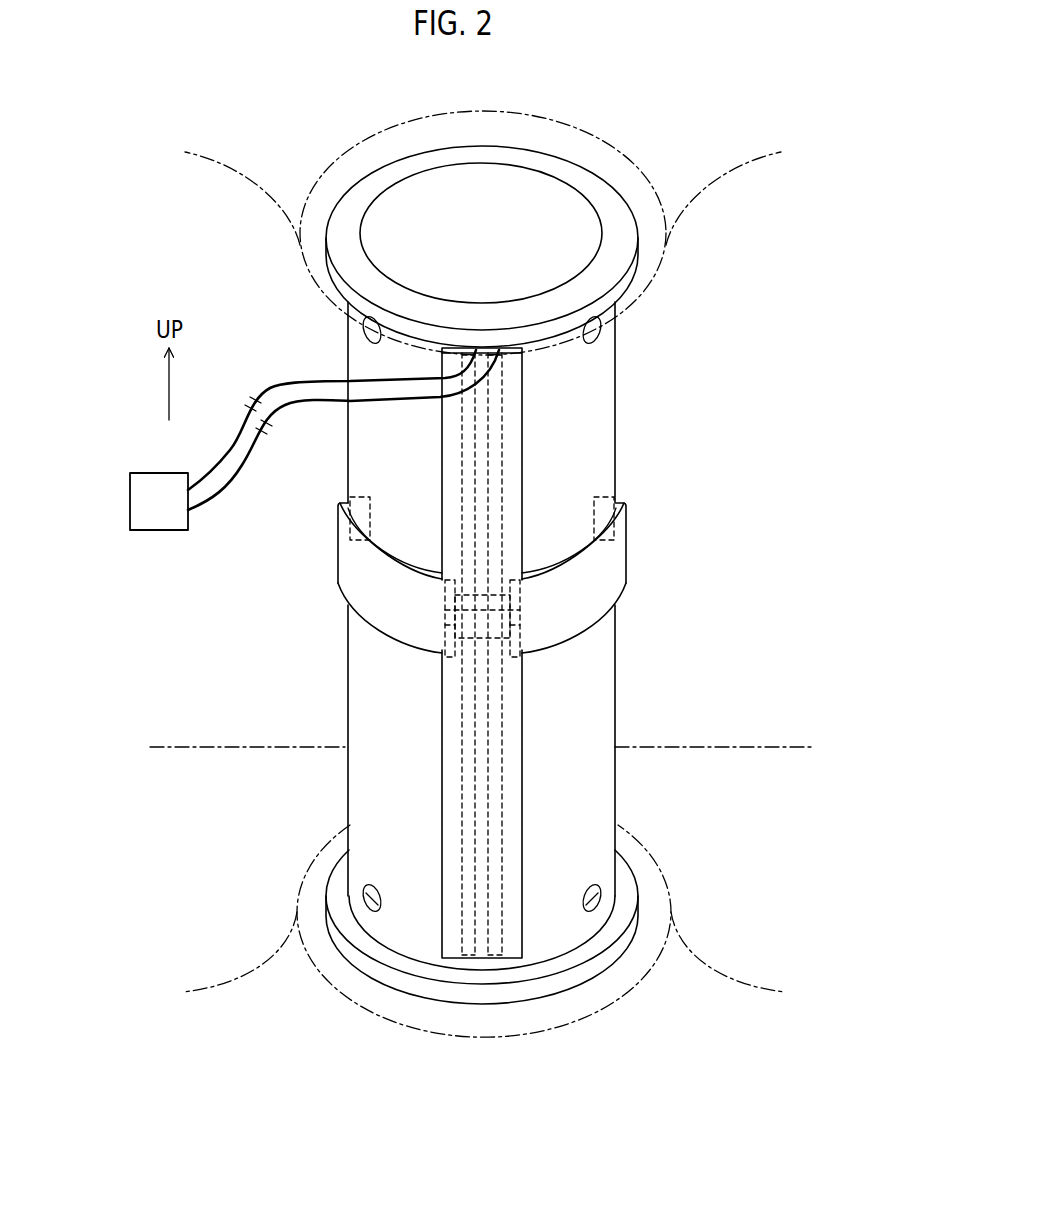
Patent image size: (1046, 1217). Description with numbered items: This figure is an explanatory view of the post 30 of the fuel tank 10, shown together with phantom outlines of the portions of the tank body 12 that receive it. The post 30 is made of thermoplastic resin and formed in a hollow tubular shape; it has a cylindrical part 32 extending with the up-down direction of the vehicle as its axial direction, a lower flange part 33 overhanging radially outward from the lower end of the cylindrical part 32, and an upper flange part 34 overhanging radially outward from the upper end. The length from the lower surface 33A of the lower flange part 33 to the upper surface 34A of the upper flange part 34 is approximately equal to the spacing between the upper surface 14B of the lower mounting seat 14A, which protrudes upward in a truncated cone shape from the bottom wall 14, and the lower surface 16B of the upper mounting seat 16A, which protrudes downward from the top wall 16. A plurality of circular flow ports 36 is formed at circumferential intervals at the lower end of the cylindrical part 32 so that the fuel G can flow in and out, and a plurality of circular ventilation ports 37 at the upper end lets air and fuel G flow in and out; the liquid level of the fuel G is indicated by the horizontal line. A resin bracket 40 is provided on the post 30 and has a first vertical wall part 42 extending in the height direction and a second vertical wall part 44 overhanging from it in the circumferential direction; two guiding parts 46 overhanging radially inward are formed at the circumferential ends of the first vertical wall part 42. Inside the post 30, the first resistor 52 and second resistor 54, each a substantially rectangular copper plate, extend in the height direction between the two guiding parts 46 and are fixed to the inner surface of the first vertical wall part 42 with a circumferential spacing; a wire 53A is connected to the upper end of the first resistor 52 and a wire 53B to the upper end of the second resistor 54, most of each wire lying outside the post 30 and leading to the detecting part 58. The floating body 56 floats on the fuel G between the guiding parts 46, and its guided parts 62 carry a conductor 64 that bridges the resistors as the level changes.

The fuel tank 10 is at (760, 111).
The tank body 12 is at (206, 167).
The bottom wall 14 is at (238, 973).
The lower mounting seat 14A is at (700, 902).
The upper surface 14B is at (310, 860).
The top wall 16 is at (247, 186).
The upper mounting seat 16A is at (698, 232).
The lower surface 16B is at (312, 293).
The post 30 is at (622, 432).
The cylindrical part 32 is at (602, 668).
The lower flange part 33 is at (625, 886).
The lower surface 33A is at (553, 994).
The upper flange part 34 is at (626, 288).
The upper surface 34A is at (605, 190).
The flow ports 36 is at (370, 912).
The ventilation ports 37 is at (366, 331).
The bracket 40 is at (632, 547).
The first vertical wall part 42 is at (527, 430).
The second vertical wall part 44 is at (602, 590).
The guiding parts 46 is at (440, 596).
The first resistor 52 is at (461, 520).
The wire 53A is at (283, 380).
The wire 53B is at (292, 410).
The second resistor 54 is at (503, 515).
The floating body 56 is at (482, 592).
The detecting part 58 is at (156, 531).
The guided parts 62 is at (441, 624).
The conductor 64 is at (480, 628).
The fuel G is at (250, 745).